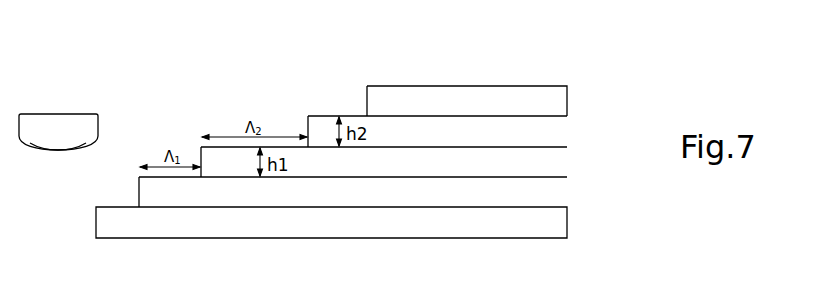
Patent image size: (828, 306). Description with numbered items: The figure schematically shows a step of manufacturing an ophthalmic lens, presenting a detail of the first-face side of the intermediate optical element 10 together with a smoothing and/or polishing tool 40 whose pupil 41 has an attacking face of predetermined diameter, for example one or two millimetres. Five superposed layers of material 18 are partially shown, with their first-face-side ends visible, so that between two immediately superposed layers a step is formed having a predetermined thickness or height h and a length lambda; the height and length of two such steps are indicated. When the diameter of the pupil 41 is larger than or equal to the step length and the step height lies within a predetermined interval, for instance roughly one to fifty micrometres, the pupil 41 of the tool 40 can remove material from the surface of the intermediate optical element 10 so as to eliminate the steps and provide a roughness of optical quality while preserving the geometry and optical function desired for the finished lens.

The intermediate optical element 10 is at (373, 123).
The superposed layers of material 18 is at (561, 100).
The smoothing and/or polishing tool 40 is at (58, 113).
The pupil 41 is at (67, 152).